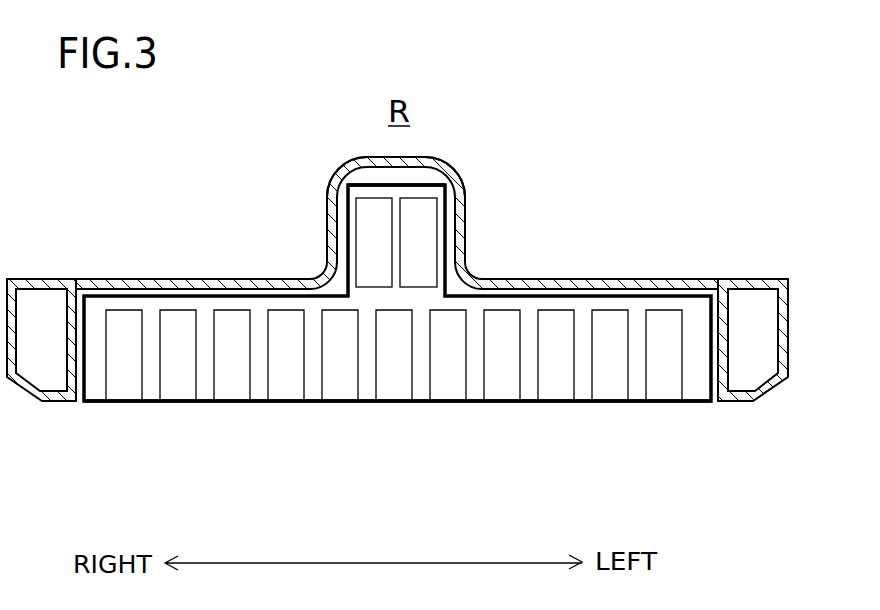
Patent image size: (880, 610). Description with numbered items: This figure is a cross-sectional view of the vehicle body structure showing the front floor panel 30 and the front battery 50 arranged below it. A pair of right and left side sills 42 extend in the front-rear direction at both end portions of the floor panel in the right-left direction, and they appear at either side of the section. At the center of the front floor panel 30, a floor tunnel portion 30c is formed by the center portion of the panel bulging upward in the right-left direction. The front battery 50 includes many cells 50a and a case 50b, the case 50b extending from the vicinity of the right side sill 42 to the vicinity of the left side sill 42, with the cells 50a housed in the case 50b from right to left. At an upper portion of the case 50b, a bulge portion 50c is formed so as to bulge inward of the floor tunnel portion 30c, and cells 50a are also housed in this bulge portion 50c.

The front floor panel 30 is at (196, 279).
The floor tunnel portion 30c is at (443, 167).
The side sill 42 is at (41, 279).
The front battery 50 is at (148, 403).
The cells 50a is at (437, 257).
The case 50b is at (362, 403).
The bulge portion 50c is at (360, 185).